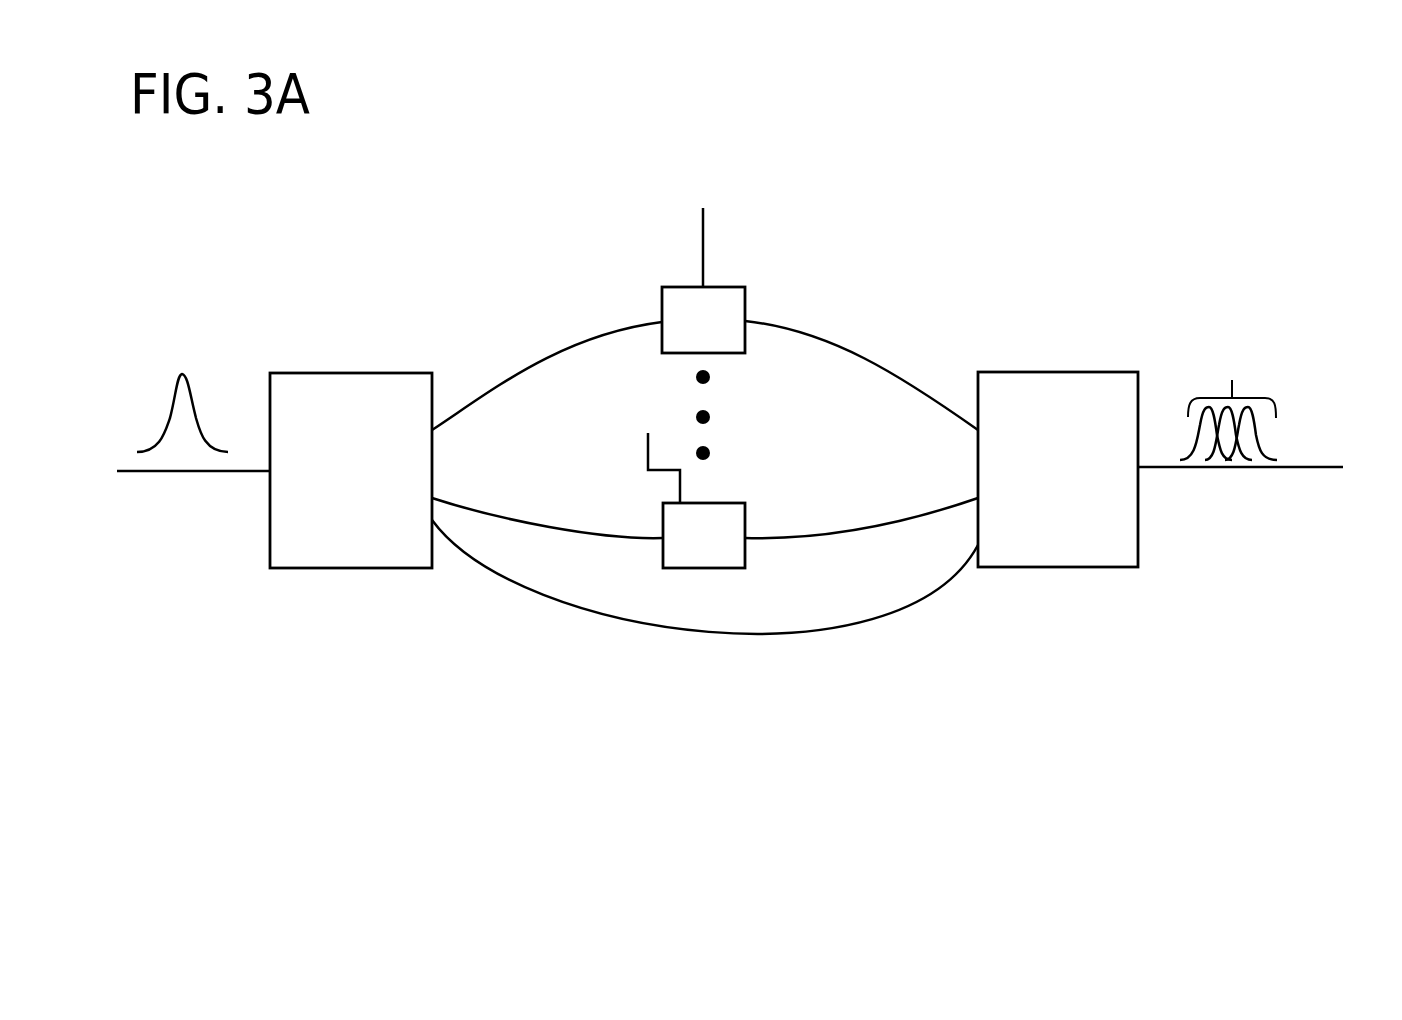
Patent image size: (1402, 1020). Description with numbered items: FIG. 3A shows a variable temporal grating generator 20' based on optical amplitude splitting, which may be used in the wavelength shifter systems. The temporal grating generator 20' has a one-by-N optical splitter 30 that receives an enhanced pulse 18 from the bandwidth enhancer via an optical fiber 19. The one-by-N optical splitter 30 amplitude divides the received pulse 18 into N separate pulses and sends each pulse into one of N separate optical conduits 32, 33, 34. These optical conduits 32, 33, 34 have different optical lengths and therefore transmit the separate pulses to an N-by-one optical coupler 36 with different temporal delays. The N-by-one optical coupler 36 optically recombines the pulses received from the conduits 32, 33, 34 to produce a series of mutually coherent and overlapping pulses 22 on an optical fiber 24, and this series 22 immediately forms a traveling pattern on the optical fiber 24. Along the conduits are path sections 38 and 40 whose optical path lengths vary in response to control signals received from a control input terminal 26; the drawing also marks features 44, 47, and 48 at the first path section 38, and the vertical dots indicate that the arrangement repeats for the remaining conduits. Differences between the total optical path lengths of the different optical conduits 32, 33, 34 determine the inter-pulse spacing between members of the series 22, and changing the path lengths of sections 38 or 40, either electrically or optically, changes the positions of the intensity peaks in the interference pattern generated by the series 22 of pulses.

The enhanced pulse 18 is at (195, 382).
The optical fiber 19 is at (212, 478).
The temporal grating generator 20' is at (503, 793).
The series of mutually coherent and overlapping pulses 22 is at (1232, 378).
The optical fiber 24 is at (1305, 470).
The control input terminal 26 is at (705, 242).
The 1×N optical splitter 30 is at (363, 373).
The optical conduit 32 is at (548, 353).
The optical conduit 33 is at (533, 518).
The optical conduit 34 is at (573, 613).
The N×1 optical coupler 36 is at (1063, 372).
The path section 38 is at (745, 287).
The path section 40 is at (745, 503).
The modulator output waveguide 44 is at (745, 320).
The modulator output port 47 is at (735, 320).
The modulator input port 48 is at (660, 313).